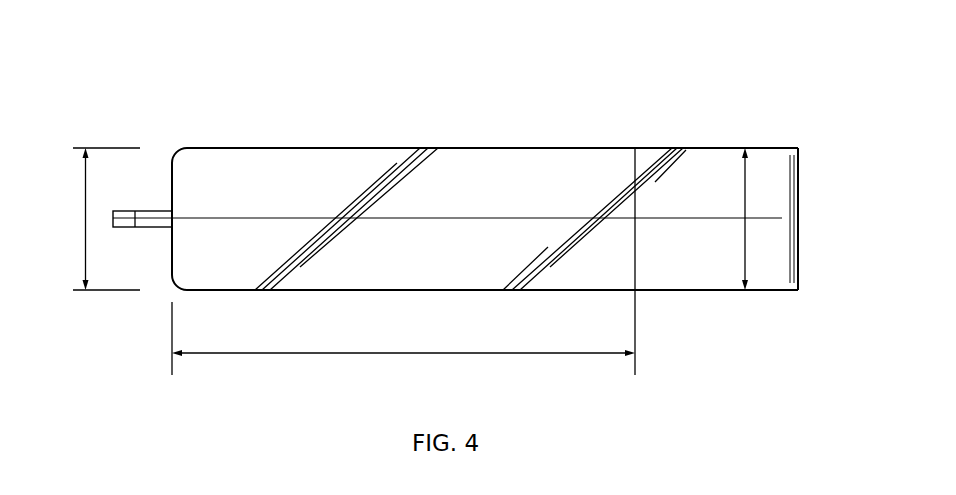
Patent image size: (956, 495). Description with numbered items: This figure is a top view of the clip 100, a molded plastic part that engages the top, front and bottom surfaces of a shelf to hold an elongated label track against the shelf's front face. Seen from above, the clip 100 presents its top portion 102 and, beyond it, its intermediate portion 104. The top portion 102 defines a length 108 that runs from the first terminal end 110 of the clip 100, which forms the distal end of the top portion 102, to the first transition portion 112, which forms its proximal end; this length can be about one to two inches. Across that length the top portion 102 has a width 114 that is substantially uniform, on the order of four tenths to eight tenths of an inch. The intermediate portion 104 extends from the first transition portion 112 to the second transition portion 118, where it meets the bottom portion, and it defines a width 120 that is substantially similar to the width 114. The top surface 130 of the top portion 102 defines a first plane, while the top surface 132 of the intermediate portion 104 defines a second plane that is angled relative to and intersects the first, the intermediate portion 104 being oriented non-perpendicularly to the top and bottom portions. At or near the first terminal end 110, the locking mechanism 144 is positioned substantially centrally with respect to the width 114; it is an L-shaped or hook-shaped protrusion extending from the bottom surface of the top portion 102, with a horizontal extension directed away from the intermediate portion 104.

The clip 100 is at (497, 81).
The top portion 102 is at (570, 145).
The intermediate portion 104 is at (806, 176).
The length 108 is at (528, 353).
The first terminal end 110 is at (171, 196).
The first transition portion 112 is at (637, 165).
The width 114 is at (83, 208).
The second transition portion 118 is at (800, 225).
The width 120 is at (745, 180).
The top surface 130 is at (336, 170).
The top surface 132 is at (783, 268).
The locking mechanism 144 is at (151, 242).